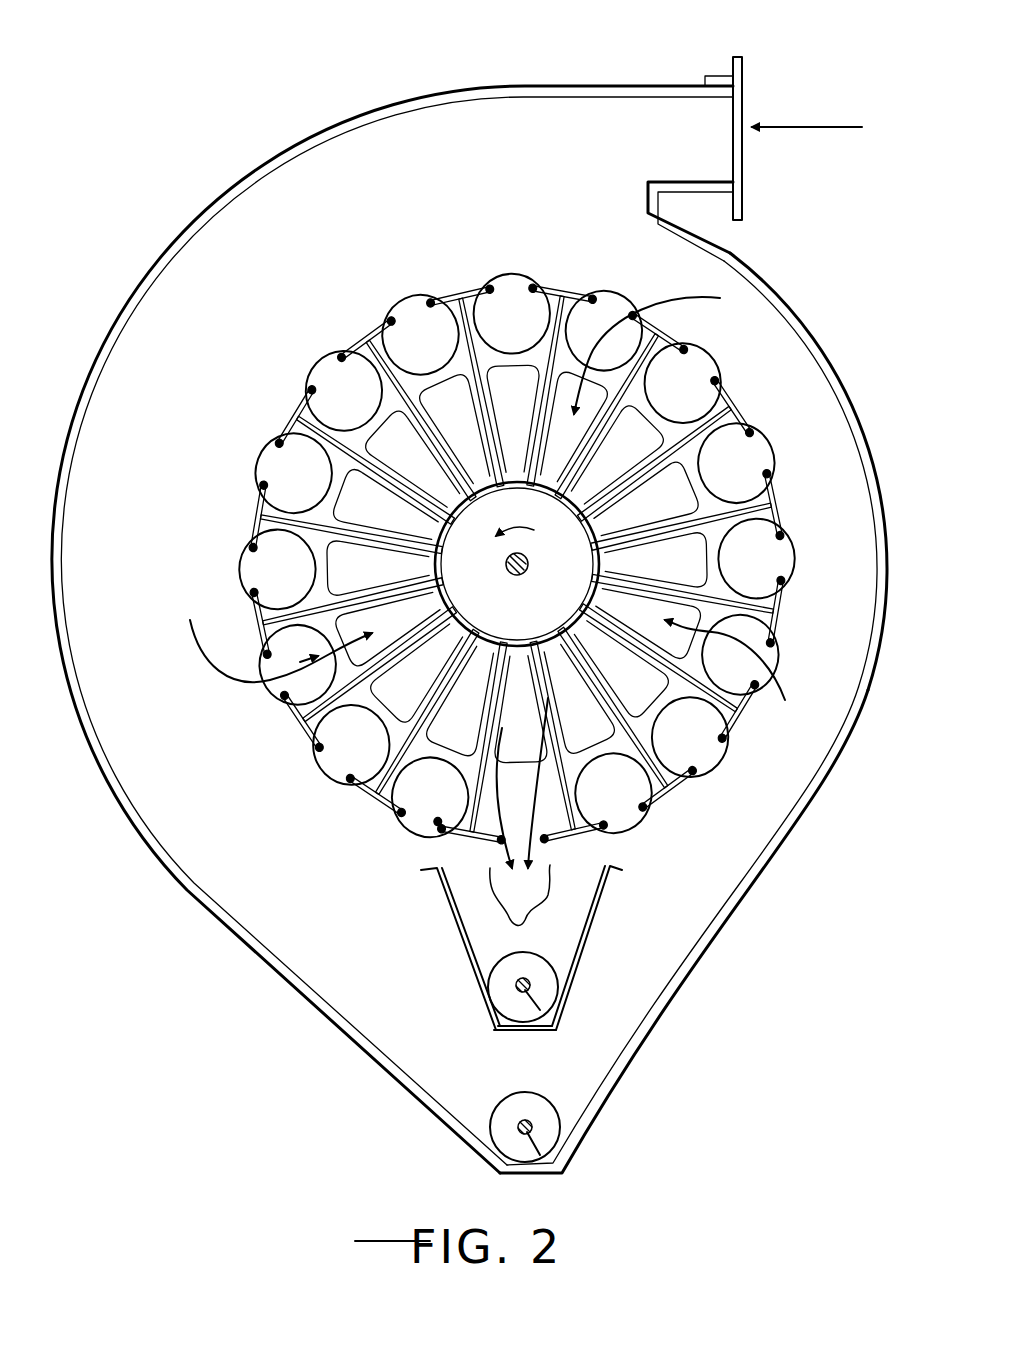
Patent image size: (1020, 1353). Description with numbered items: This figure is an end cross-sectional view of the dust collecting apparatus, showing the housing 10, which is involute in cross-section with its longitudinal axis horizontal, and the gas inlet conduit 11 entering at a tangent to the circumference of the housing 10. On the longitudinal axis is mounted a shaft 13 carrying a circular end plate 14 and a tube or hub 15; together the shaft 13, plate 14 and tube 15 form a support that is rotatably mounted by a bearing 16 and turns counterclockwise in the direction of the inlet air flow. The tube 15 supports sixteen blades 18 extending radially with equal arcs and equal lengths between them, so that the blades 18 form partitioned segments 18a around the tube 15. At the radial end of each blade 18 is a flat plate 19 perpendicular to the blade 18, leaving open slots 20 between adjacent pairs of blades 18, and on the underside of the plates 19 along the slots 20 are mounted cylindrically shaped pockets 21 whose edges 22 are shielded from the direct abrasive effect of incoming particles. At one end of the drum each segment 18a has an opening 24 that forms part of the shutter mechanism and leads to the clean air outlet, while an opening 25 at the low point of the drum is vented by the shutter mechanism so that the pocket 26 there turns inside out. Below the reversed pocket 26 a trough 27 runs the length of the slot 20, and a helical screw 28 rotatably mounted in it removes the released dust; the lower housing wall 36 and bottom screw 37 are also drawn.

The housing 10 is at (827, 355).
The gas inlet conduit 11 is at (661, 86).
The shaft 13 is at (540, 551).
The circular end plate 14 is at (517, 564).
The tube or hub 15 is at (487, 546).
The bearing 16 is at (512, 836).
The blade 18 is at (517, 540).
The partitioned segment 18a is at (517, 564).
The flat plate 19 is at (517, 554).
The open slot 20 is at (532, 561).
The cylindrically shaped pocket 21 is at (697, 691).
The pocket edge 22 is at (401, 845).
The opening 24 is at (541, 543).
The opening 25 is at (510, 805).
The reversed pocket 26 is at (548, 882).
The trough 27 is at (556, 1032).
The helical screw 28 is at (537, 1002).
The housing bottom wall 36 is at (608, 1102).
The bottom roll 37 is at (566, 1162).